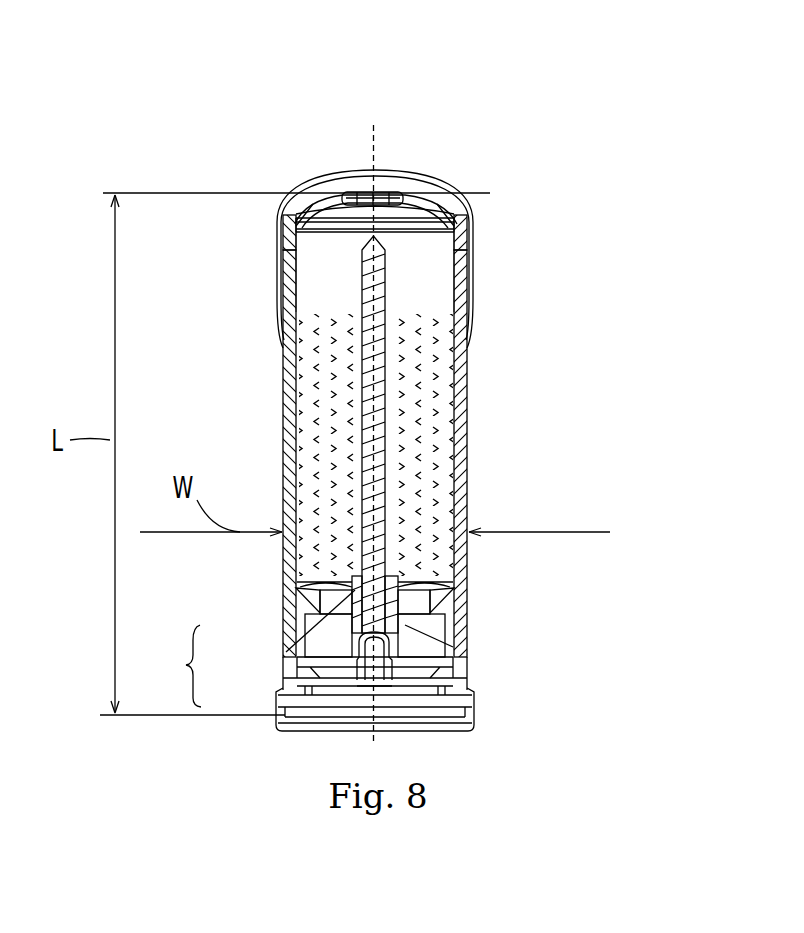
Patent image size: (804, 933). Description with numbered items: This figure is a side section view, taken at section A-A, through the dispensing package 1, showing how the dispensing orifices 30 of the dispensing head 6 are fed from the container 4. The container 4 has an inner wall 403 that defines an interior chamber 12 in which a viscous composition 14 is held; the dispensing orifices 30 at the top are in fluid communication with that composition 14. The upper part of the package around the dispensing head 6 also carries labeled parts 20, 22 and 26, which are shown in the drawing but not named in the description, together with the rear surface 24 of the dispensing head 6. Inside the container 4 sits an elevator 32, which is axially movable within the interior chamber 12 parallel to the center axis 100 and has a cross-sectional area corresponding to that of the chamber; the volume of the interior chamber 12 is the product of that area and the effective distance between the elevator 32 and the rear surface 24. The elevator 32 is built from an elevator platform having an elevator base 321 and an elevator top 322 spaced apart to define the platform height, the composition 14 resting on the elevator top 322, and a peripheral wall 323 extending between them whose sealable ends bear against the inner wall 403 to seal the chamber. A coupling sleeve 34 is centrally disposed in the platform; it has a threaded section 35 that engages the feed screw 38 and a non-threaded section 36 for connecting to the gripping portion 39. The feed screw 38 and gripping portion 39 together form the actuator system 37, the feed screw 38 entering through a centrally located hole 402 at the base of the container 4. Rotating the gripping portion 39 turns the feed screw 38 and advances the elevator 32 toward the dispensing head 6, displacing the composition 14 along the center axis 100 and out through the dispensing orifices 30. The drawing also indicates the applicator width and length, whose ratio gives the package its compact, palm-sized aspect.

The dispensing package 1 is at (500, 100).
The container 4 is at (467, 346).
The dispensing head 6 is at (430, 205).
The interior chamber 12 is at (412, 262).
The viscous composition 14 is at (441, 452).
The cap 20 is at (277, 211).
The valve member 22 is at (372, 185).
The rear surface 24 is at (284, 245).
The membrane 26 is at (395, 196).
The dispensing orifices 30 is at (352, 194).
The elevator 32 is at (440, 588).
The coupling sleeve 34 is at (178, 666).
The threaded section 35 is at (286, 652).
The non-threaded section 36 is at (333, 614).
The actuator system 37 is at (373, 358).
The feed screw 38 is at (453, 647).
The gripping portion 39 is at (462, 698).
The center axis 100 is at (382, 296).
The elevator base 321 is at (467, 667).
The elevator top 322 is at (453, 589).
The peripheral wall 323 is at (452, 604).
The centrally located hole 402 is at (396, 680).
The inner wall 403 is at (462, 397).